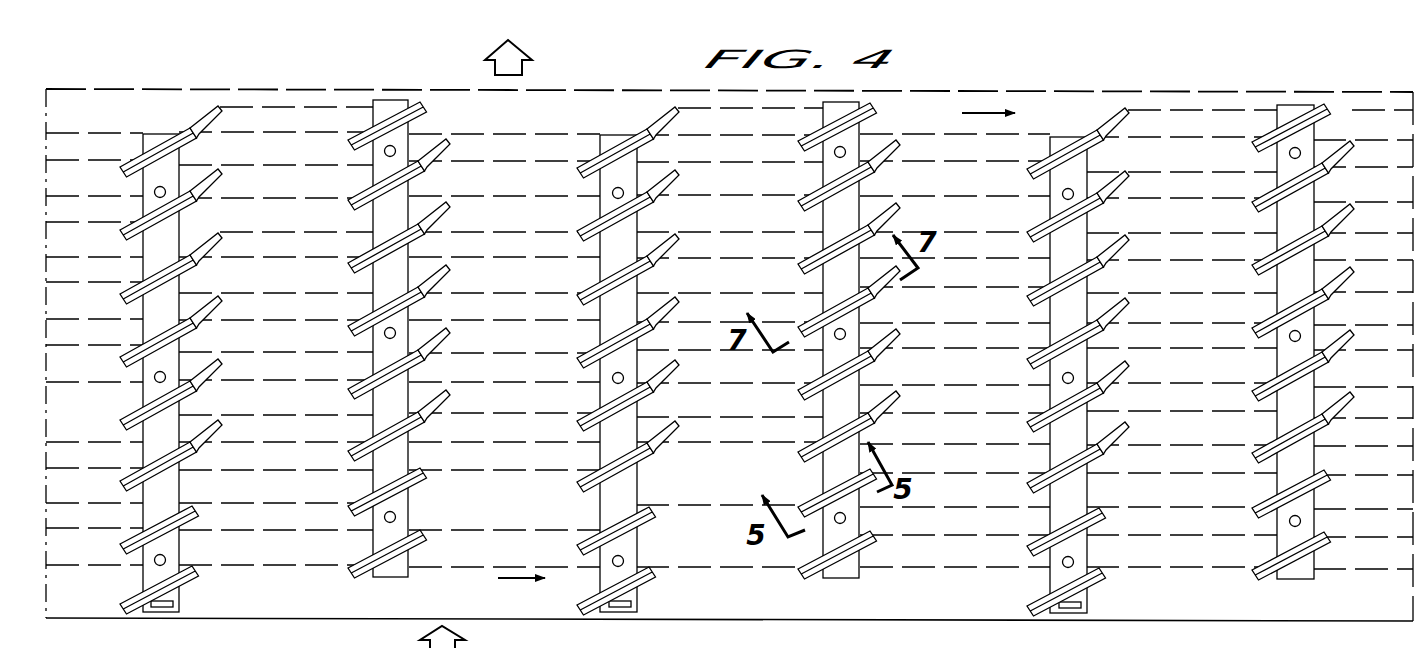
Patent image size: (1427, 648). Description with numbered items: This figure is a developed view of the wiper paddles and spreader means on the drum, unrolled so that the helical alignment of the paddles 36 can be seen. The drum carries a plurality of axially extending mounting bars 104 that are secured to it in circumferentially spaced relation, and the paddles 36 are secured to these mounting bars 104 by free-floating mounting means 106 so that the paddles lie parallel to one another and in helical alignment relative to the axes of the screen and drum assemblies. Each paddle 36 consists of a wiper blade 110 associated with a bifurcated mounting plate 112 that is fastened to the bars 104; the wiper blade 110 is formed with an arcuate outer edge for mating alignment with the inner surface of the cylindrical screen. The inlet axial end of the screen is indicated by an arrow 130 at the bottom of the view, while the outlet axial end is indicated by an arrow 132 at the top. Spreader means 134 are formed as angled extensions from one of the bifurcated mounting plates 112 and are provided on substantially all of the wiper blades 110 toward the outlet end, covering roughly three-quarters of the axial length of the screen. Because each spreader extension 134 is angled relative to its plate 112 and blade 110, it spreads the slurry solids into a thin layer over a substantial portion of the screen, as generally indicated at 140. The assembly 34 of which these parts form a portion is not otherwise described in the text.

The louver panel assembly 34 is at (1133, 88).
The paddle 36 is at (369, 179).
The mounting bar 104 is at (150, 508).
The free-floating mounting means 106 is at (416, 466).
The wiper blade 110 is at (378, 311).
The mounting plate 112 is at (413, 240).
The arrow 130 is at (418, 644).
The arrow 132 is at (486, 69).
The spreader means 134 is at (449, 209).
The thin layer of solids 140 is at (270, 292).